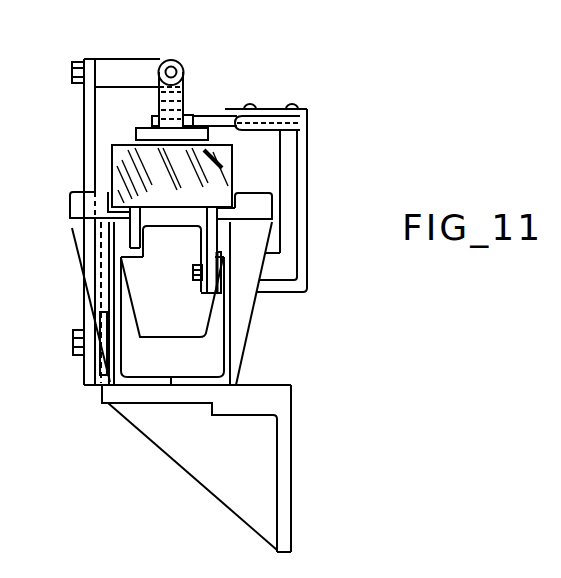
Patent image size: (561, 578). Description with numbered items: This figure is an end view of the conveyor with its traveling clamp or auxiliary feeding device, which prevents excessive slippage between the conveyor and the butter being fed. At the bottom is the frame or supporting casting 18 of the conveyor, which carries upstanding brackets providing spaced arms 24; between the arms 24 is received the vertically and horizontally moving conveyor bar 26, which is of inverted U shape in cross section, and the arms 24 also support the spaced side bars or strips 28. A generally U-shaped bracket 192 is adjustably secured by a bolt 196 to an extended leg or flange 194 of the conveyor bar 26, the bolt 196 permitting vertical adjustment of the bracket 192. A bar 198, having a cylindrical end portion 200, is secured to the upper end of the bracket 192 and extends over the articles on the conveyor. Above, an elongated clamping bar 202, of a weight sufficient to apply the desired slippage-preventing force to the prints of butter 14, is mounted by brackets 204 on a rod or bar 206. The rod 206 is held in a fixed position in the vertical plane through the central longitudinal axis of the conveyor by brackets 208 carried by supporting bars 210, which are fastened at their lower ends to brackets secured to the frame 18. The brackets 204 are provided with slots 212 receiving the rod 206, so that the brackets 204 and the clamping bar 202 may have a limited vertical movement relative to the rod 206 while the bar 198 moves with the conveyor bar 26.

The prints of butter 14 is at (218, 172).
The frame or supporting casting 18 is at (283, 437).
The spaced arms 24 is at (118, 342).
The conveyor bar 26 is at (166, 218).
The side bars or strips 28 is at (80, 203).
The U-shaped bracket 192 is at (290, 222).
The extended leg or flange 194 is at (208, 245).
The bolt 196 is at (194, 273).
The bar 198 is at (226, 113).
The cylindrical end portion 200 is at (192, 113).
The clamping bar 202 is at (149, 134).
The brackets 204 is at (161, 98).
The rod or bar 206 is at (166, 66).
The brackets 208 is at (110, 80).
The supporting bars 210 is at (90, 136).
The slots 212 is at (172, 90).